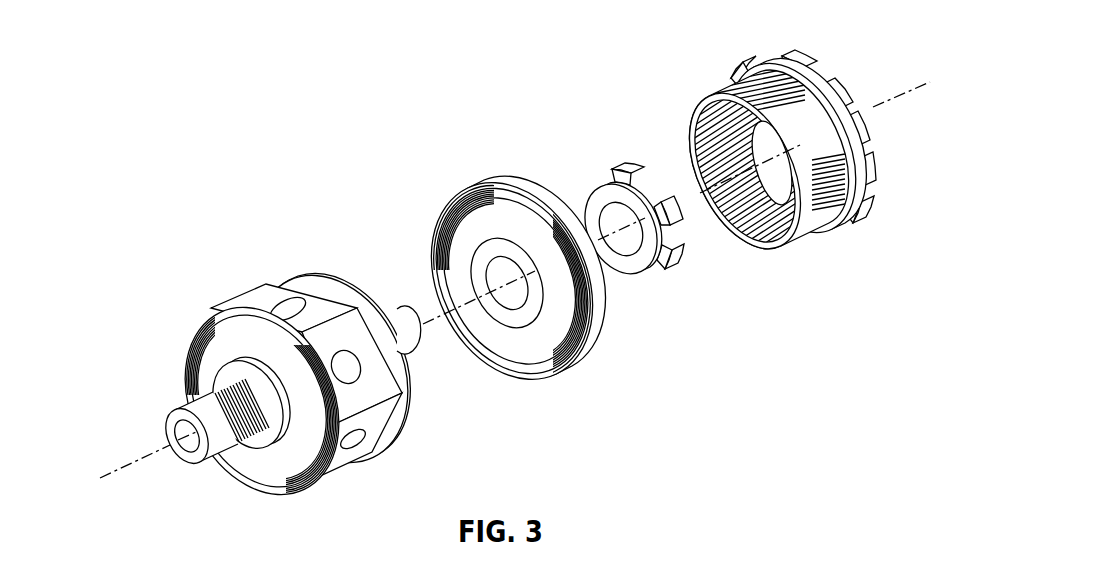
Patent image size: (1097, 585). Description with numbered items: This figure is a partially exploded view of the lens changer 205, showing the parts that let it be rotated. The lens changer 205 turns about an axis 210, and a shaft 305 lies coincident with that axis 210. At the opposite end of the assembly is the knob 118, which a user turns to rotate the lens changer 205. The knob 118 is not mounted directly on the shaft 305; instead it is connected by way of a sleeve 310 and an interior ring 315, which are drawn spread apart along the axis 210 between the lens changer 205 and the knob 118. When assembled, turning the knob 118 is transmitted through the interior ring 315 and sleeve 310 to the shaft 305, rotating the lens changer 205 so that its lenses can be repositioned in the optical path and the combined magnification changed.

The knob 118 is at (784, 58).
The lens changer 205 is at (297, 373).
The axis 210 is at (138, 450).
The shaft 305 is at (398, 310).
The sleeve 310 is at (510, 347).
The interior ring 315 is at (635, 265).